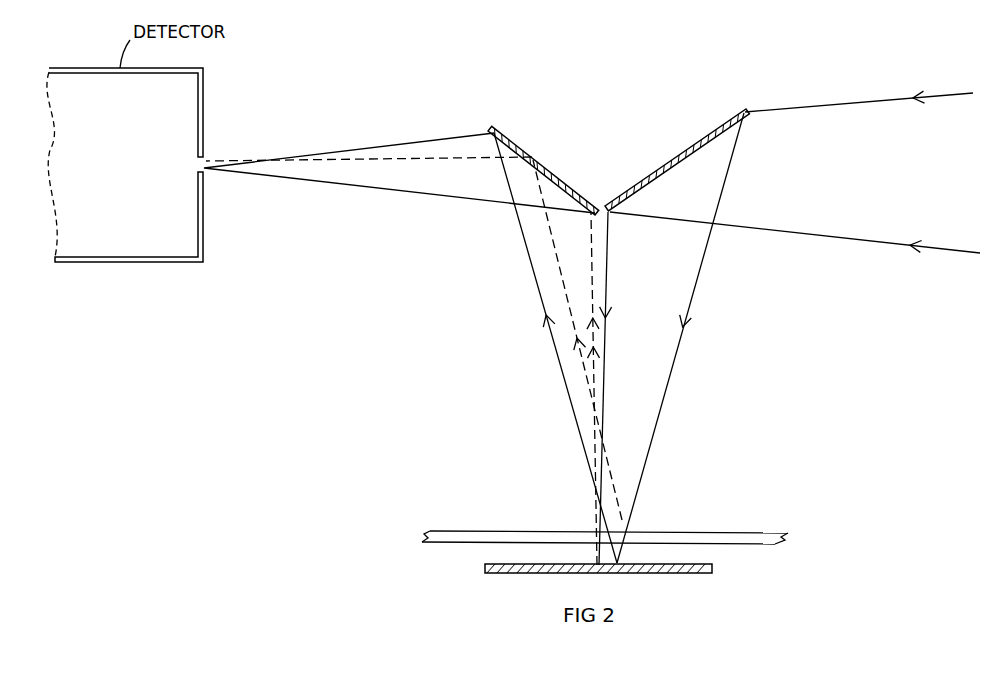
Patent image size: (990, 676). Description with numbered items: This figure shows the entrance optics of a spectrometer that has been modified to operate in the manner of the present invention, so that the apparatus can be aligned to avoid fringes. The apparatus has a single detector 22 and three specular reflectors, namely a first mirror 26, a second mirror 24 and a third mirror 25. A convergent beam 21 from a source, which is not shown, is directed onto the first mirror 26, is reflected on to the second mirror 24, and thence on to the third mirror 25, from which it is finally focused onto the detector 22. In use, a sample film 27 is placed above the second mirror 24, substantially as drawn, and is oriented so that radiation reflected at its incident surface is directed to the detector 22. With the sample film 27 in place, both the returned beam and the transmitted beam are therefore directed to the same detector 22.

The convergent beam 21 is at (815, 110).
The detector 22 is at (130, 262).
The second mirror 24 is at (698, 572).
The third mirror 25 is at (513, 140).
The first mirror 26 is at (670, 158).
The sample film 27 is at (757, 535).